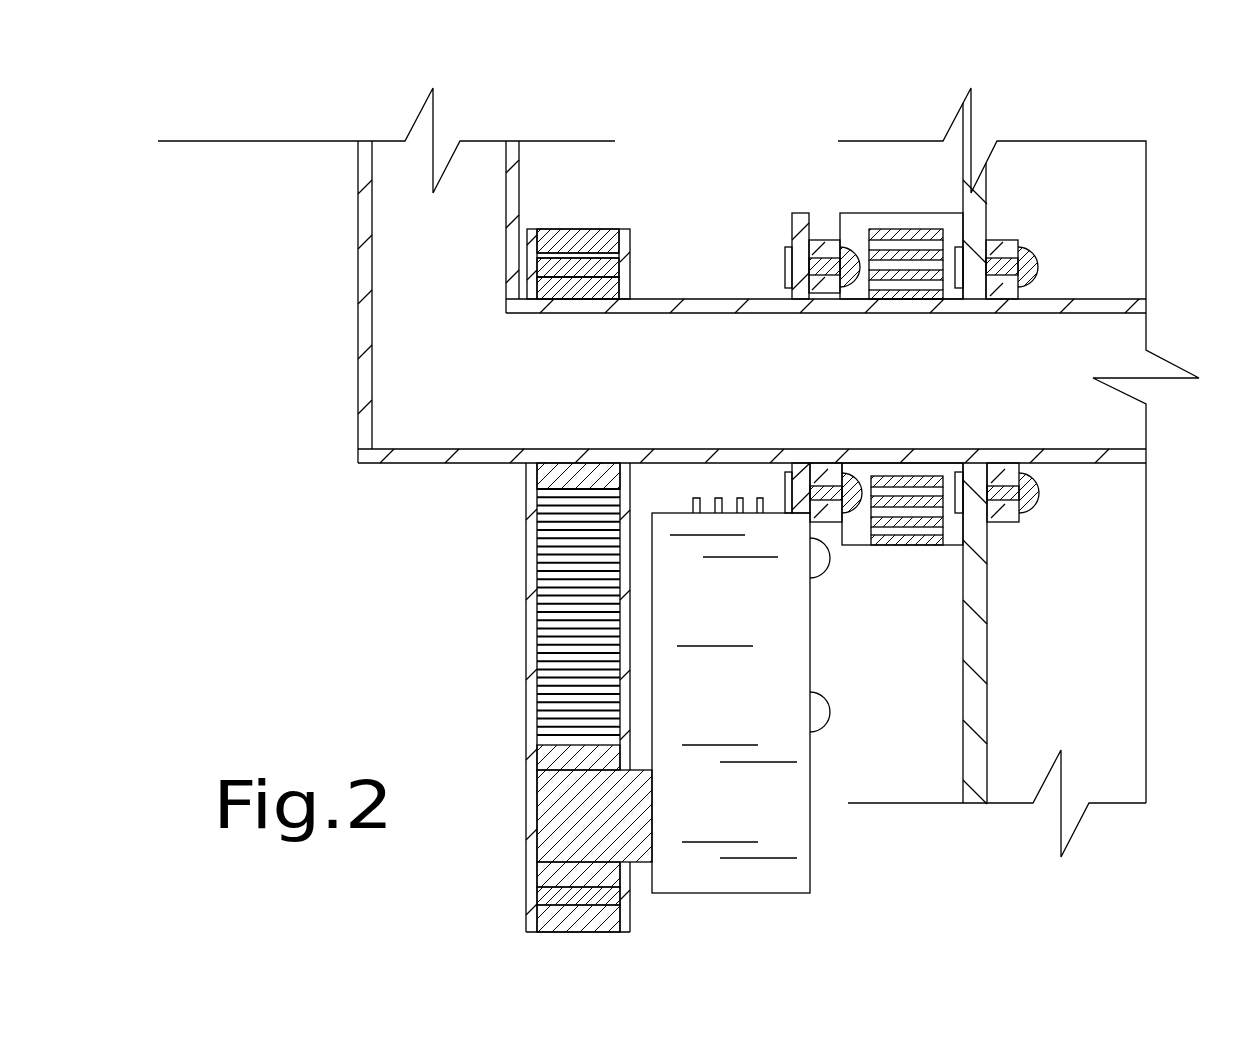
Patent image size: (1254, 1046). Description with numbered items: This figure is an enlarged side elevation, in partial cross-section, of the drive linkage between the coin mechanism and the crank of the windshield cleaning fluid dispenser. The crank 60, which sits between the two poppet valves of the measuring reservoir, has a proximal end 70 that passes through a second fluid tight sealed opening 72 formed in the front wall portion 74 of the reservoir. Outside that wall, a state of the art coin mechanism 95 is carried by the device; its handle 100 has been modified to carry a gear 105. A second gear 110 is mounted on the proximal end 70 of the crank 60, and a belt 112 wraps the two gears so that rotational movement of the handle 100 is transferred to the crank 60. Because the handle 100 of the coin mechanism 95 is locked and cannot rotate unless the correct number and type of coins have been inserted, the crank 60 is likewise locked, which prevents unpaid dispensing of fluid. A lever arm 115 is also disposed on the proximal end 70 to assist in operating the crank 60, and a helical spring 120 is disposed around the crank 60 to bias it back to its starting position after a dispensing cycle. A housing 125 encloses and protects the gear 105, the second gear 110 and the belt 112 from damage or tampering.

The crank 60 is at (1095, 305).
The proximal end 70 is at (652, 307).
The second fluid tight sealed opening 72 is at (1037, 297).
The front wall portion 74 is at (980, 212).
The coin mechanism 95 is at (790, 847).
The handle 100 is at (553, 833).
The gear 105 is at (548, 760).
The second gear 110 is at (557, 473).
The belt 112 is at (545, 266).
The lever arm 115 is at (358, 240).
The helical spring 120 is at (897, 518).
The housing 125 is at (592, 238).